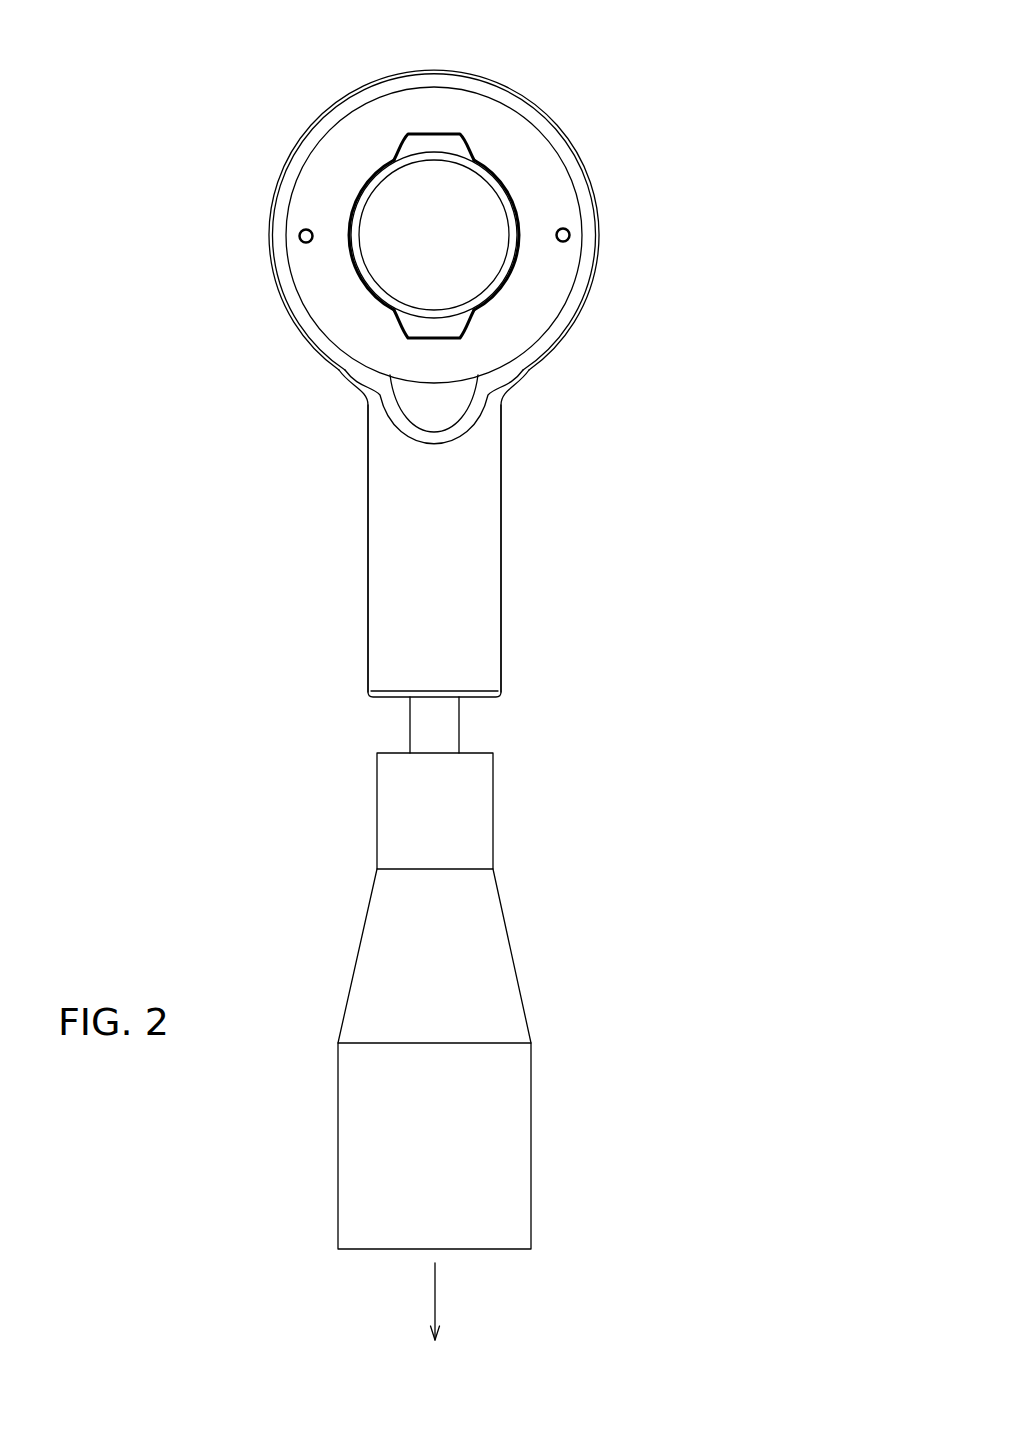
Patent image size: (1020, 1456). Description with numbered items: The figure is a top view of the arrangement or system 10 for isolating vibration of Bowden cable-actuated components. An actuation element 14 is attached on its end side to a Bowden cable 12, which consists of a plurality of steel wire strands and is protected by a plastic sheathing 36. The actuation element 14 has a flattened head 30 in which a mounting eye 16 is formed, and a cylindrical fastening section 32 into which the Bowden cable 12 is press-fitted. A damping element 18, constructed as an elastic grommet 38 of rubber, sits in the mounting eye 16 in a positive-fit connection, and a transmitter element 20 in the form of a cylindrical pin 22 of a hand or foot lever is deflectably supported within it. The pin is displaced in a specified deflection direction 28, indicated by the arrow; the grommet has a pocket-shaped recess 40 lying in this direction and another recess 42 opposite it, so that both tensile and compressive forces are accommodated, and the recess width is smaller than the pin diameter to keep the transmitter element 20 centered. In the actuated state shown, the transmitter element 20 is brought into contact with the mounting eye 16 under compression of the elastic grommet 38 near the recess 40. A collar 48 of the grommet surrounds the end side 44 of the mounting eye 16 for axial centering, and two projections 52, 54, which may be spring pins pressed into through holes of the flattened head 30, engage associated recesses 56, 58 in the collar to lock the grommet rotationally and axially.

The arrangement or system 10 is at (178, 1078).
The Bowden cable 12 is at (460, 735).
The actuation element 14 is at (522, 505).
The mounting eye 16 is at (389, 190).
The damping element 18 is at (523, 323).
The transmitter element 20 is at (382, 272).
The cylindrical pin 22 is at (420, 250).
The specified deflection direction 28 is at (435, 1284).
The flattened head 30 is at (447, 389).
The cylindrical fastening section 32 is at (502, 614).
The plastic sheathing 36 is at (531, 1190).
The elastic grommet 38 is at (533, 172).
The recess 40 is at (423, 330).
The another recess 42 is at (441, 146).
The end side 44 is at (533, 110).
The collar 48 is at (383, 77).
The projection 52 is at (299, 236).
The projection 54 is at (570, 233).
The recess 56 is at (305, 228).
The recess 58 is at (569, 241).